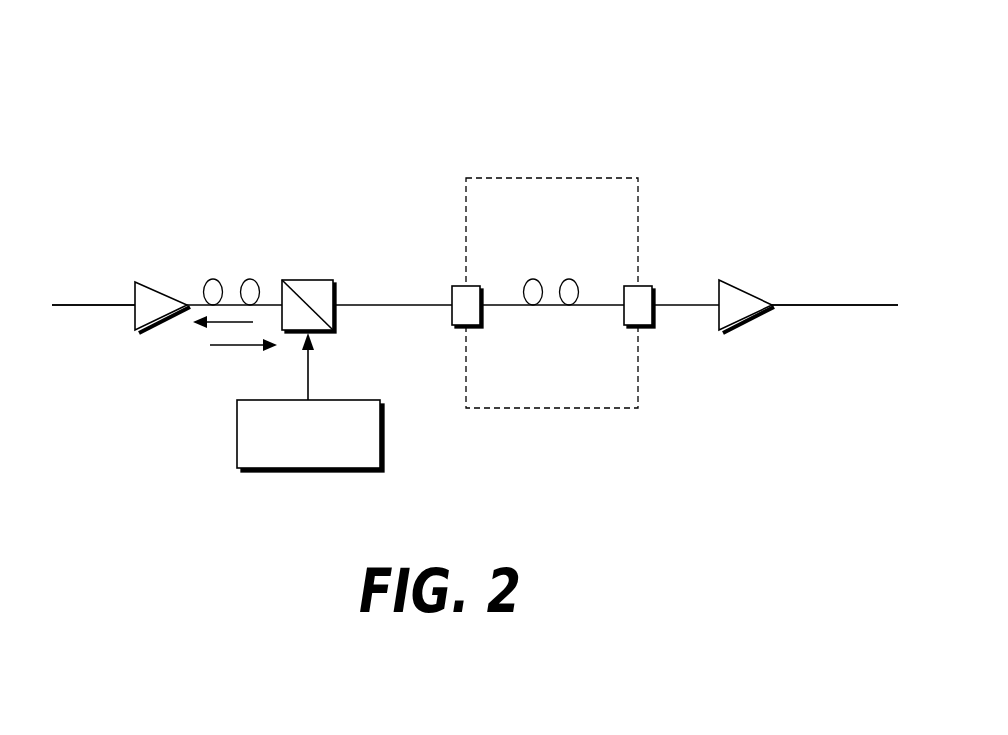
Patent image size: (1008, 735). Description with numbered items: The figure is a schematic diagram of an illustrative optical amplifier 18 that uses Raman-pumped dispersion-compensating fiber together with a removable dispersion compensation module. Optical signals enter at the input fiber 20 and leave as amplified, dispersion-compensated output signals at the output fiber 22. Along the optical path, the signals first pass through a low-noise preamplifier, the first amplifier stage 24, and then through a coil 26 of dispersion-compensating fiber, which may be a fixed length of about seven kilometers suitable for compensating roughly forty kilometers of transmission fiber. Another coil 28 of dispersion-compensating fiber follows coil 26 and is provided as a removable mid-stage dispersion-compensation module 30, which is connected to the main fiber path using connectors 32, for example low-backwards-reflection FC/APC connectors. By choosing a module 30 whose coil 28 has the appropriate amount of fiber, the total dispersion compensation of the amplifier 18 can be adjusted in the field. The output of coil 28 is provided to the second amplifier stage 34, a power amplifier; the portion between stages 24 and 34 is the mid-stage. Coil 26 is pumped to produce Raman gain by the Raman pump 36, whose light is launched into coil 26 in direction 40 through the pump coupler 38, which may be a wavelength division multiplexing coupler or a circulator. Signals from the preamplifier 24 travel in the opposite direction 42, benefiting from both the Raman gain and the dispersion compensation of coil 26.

The optical amplifier 18 is at (602, 64).
The input fiber 20 is at (90, 305).
The output fiber 22 is at (857, 305).
The first amplifier stage 24 is at (155, 300).
The coil of dispersion-compensating fiber 26 is at (266, 274).
The coil of dispersion-compensating fiber 28 is at (588, 275).
The mid-stage dispersion-compensation module 30 is at (600, 178).
The connectors 32 is at (463, 312).
The second amplifier stage 34 is at (748, 287).
The Raman pump 36 is at (360, 472).
The pump coupler 38 is at (318, 280).
The direction 40 is at (235, 322).
The direction 42 is at (222, 346).